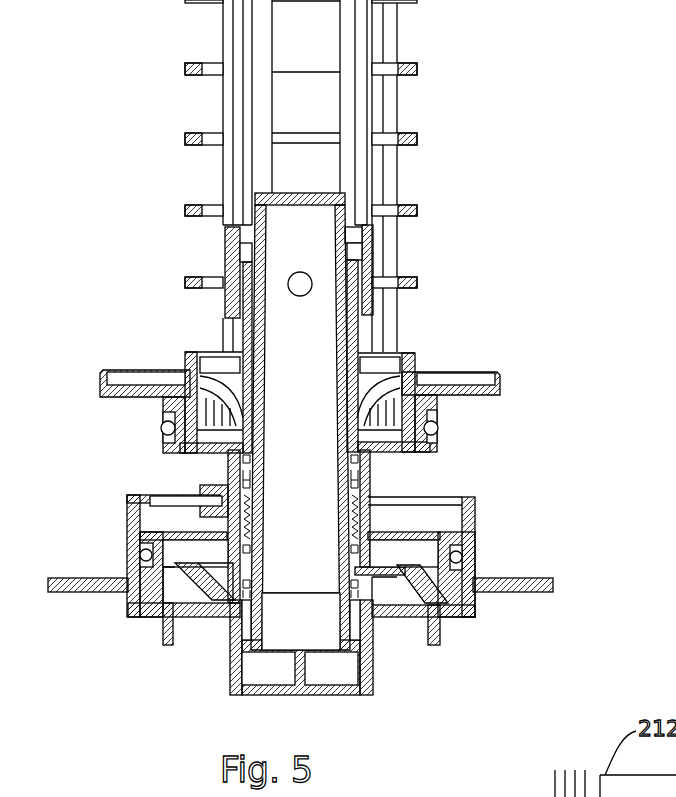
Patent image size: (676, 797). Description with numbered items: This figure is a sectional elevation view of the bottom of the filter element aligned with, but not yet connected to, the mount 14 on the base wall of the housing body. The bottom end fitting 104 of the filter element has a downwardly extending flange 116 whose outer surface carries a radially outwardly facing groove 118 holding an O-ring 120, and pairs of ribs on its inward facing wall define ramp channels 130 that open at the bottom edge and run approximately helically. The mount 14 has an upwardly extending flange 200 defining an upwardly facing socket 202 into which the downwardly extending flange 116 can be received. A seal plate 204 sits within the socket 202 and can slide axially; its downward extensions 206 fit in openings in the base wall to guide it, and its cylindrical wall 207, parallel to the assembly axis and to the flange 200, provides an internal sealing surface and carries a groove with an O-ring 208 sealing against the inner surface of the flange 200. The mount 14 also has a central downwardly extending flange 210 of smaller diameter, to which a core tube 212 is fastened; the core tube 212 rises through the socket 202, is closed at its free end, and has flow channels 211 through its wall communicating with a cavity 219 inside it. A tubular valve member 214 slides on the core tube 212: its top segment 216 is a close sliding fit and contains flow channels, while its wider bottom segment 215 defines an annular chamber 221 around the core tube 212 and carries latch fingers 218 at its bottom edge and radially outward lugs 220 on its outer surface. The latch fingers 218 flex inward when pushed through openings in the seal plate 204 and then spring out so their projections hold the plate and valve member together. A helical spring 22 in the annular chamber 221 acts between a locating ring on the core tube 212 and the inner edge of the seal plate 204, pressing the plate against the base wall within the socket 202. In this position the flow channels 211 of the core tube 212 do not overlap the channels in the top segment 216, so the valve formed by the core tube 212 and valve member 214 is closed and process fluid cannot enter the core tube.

The mount 14 is at (553, 584).
The helical spring 22 is at (368, 545).
The bottom end fitting 104 is at (398, 372).
The downwardly extending flange 116 is at (430, 400).
The groove 118 is at (163, 437).
The O-ring 120 is at (438, 430).
The ramp channels 130 is at (200, 370).
The upwardly extending flange 200 is at (475, 517).
The socket 202 is at (158, 492).
The seal plate 204 is at (450, 590).
The downward extensions 206 is at (165, 638).
The cylindrical wall 207 is at (150, 561).
The O-ring 208 is at (462, 553).
The central downwardly extending flange 210 is at (365, 688).
The flow channels 211 is at (313, 283).
The core tube 212 is at (368, 220).
The tubular valve member 214 is at (243, 337).
The bottom segment 215 is at (368, 523).
The top segment 216 is at (353, 298).
The latch fingers 218 is at (340, 288).
The cavity 219 is at (290, 235).
The lugs 220 is at (220, 515).
The annular chamber 221 is at (355, 512).